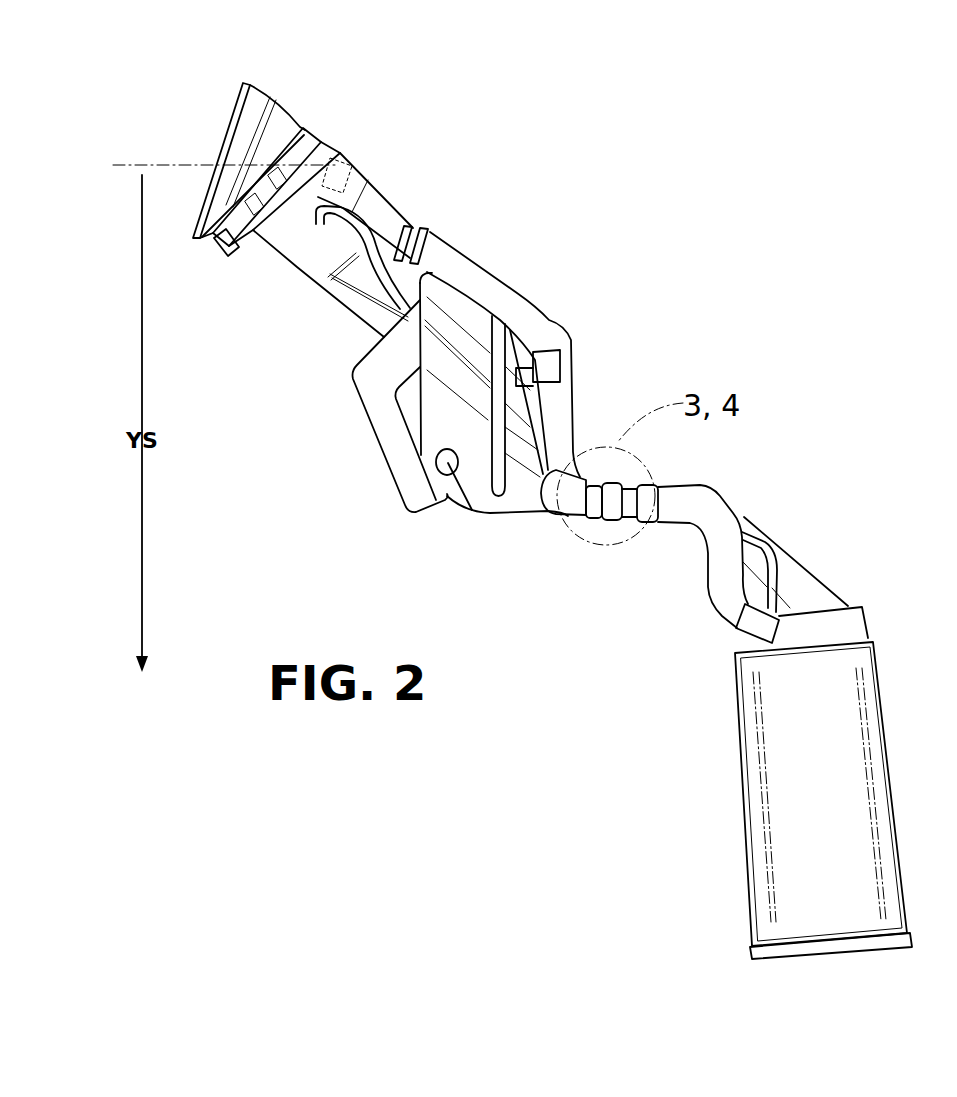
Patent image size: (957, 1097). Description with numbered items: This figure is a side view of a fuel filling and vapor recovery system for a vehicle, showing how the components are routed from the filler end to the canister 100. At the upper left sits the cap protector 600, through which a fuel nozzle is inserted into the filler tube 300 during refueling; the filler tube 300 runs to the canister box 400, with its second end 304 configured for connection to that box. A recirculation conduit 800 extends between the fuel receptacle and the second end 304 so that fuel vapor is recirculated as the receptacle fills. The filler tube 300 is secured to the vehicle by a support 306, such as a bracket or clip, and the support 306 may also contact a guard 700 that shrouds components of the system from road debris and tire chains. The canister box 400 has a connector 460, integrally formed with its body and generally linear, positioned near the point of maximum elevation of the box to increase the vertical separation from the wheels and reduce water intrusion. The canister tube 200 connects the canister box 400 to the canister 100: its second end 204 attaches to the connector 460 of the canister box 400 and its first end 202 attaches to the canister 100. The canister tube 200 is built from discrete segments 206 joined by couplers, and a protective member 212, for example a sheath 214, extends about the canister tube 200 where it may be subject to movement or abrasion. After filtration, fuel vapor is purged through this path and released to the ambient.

The canister 100 is at (787, 788).
The canister tube 200 is at (562, 320).
The first end 202 is at (757, 627).
The second end 204 is at (389, 222).
The segments 206 is at (454, 250).
The protective member 212 is at (490, 246).
The sheath 214 is at (497, 280).
The filler tube 300 is at (357, 314).
The second end 304 is at (268, 257).
The support 306 is at (388, 435).
The canister box 400 is at (216, 252).
The connector 460 is at (340, 170).
The cap protector 600 is at (291, 102).
The guard 700 is at (474, 487).
The recirculation conduit 800 is at (345, 281).